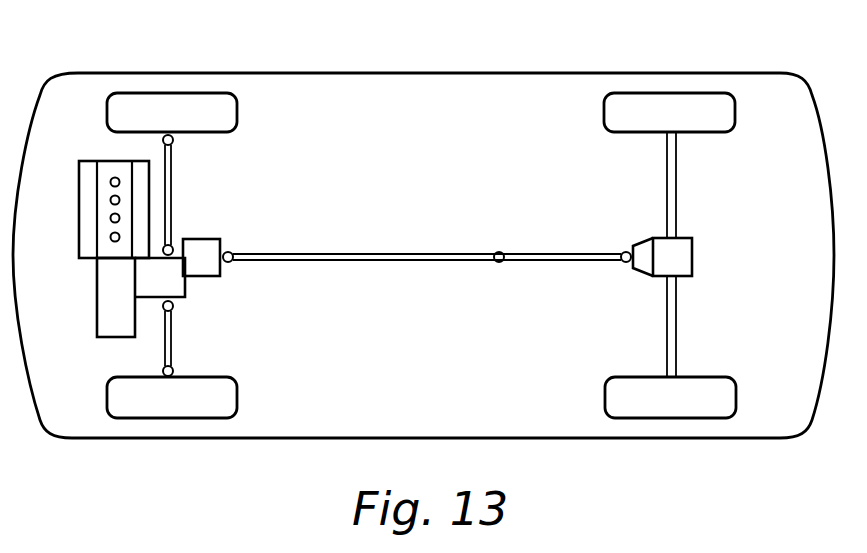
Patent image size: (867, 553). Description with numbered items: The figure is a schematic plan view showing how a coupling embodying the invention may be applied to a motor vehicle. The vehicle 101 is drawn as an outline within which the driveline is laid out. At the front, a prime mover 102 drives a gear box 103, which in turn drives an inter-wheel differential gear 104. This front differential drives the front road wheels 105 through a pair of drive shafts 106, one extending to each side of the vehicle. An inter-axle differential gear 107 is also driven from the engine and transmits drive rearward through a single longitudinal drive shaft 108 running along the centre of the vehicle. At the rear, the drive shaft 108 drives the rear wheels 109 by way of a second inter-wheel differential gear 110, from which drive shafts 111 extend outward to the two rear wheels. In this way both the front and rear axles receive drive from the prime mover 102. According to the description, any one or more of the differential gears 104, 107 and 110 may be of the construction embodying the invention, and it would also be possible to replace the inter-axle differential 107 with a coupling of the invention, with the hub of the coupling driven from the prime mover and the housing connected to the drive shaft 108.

The vehicle 101 is at (520, 95).
The prime mover 102 is at (112, 167).
The gear box 103 is at (103, 317).
The inter-wheel differential gear 104 is at (175, 283).
The road wheels 105 is at (180, 103).
The drive shafts 106 is at (174, 182).
The inter-axle differential gear 107 is at (205, 243).
The drive shaft 108 is at (358, 252).
The rear wheels 109 is at (678, 105).
The inter-wheel differential gear 110 is at (685, 255).
The drive shafts 111 is at (673, 182).